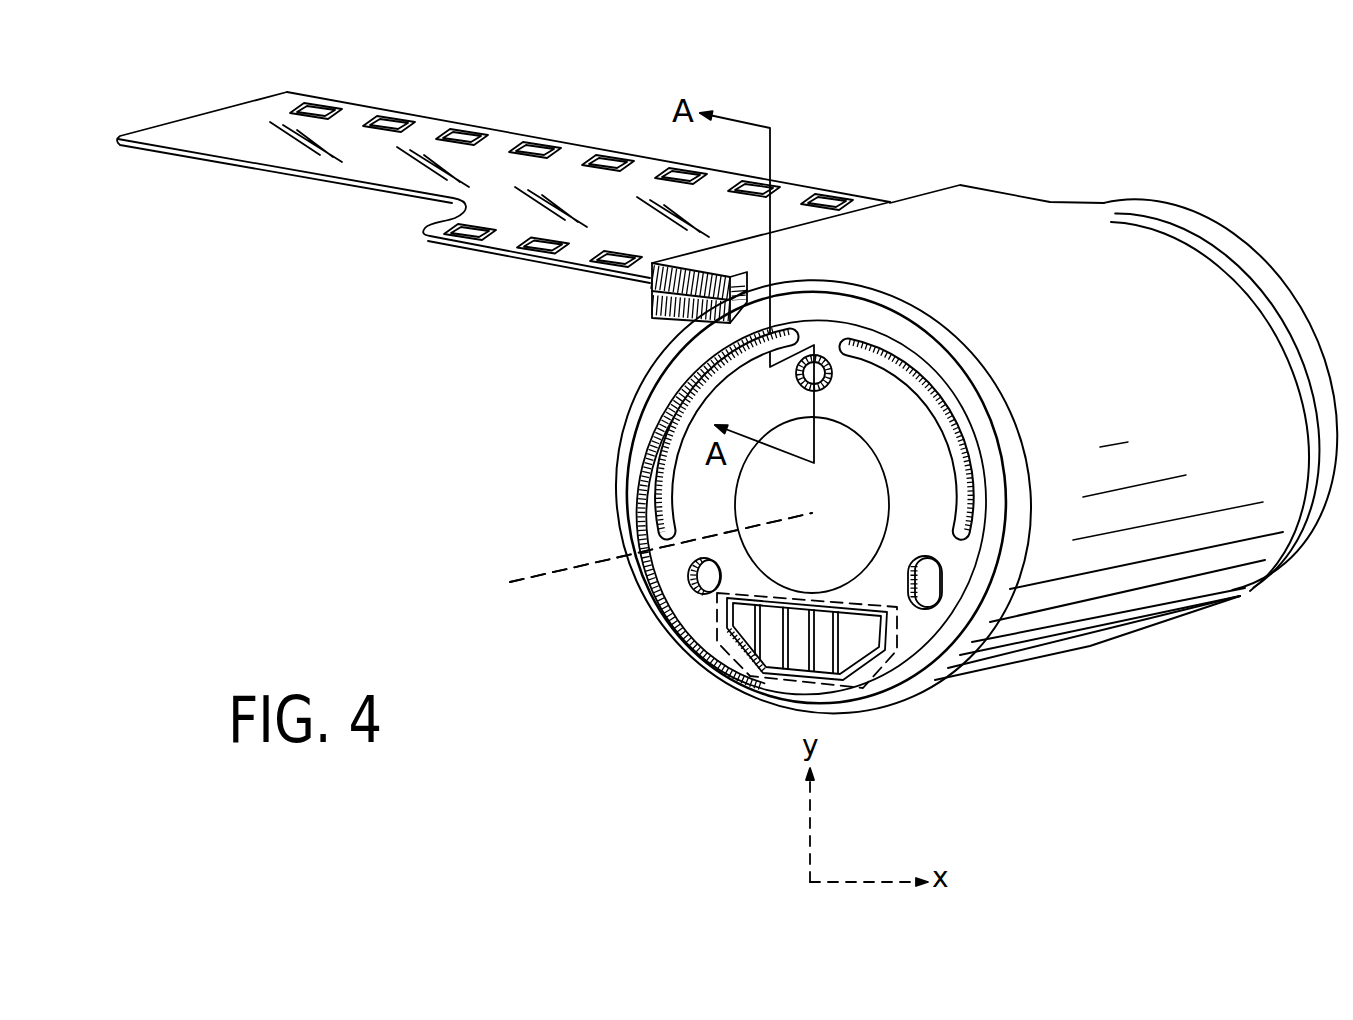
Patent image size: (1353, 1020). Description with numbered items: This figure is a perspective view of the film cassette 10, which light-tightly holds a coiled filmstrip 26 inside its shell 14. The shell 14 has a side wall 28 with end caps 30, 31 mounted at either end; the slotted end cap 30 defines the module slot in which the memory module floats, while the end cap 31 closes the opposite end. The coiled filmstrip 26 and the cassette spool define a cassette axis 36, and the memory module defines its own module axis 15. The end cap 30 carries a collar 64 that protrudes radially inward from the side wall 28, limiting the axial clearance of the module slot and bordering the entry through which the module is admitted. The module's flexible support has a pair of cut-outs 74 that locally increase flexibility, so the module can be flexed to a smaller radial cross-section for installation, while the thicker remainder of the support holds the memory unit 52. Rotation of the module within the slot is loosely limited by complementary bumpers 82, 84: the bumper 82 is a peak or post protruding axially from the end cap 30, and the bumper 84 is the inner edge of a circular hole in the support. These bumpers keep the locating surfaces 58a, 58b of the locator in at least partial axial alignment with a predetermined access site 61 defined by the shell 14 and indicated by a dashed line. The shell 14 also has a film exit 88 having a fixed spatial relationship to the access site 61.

The film cassette 10 is at (1250, 183).
The shell 14 is at (1133, 633).
The module axis 15 is at (543, 630).
The filmstrip 26 is at (327, 183).
The side wall 28 is at (1063, 232).
The end cap 30 is at (943, 675).
The end cap 31 is at (1271, 578).
The cassette axis 36 is at (567, 577).
The memory unit 52 is at (852, 663).
The locating surface 58a is at (910, 557).
The locating surface 58b is at (687, 577).
The access site 61 is at (707, 677).
The collar 64 is at (647, 463).
The cut-outs 74 is at (922, 385).
The bumper 82 is at (830, 380).
The bumper 84 is at (798, 378).
The film exit 88 is at (640, 297).